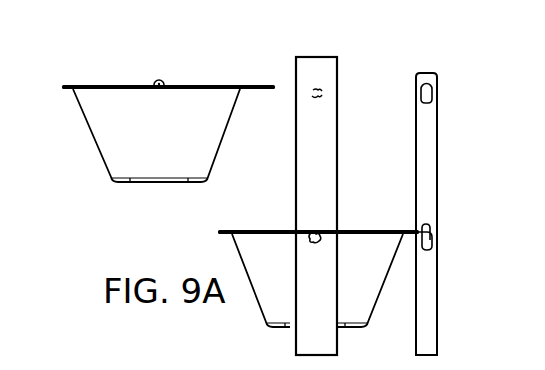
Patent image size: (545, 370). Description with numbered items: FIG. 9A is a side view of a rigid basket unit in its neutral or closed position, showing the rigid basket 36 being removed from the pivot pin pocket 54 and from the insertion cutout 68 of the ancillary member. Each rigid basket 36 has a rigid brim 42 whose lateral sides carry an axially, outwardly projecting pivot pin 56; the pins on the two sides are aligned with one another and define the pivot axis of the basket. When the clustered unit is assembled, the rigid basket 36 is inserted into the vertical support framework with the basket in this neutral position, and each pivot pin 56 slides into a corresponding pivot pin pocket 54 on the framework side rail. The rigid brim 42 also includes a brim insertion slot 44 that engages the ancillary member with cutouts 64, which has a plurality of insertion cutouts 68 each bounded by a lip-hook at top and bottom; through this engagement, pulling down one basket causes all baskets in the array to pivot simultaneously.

The rigid basket 36 is at (232, 84).
The rigid brim 42 is at (73, 89).
The pivot pin with flange 56 is at (157, 82).
The brim insertion slot 44 is at (274, 213).
The pivot pin pocket 54 is at (311, 236).
The ancillary member with cutouts 64 is at (440, 147).
The insertion cutout 68 is at (430, 92).